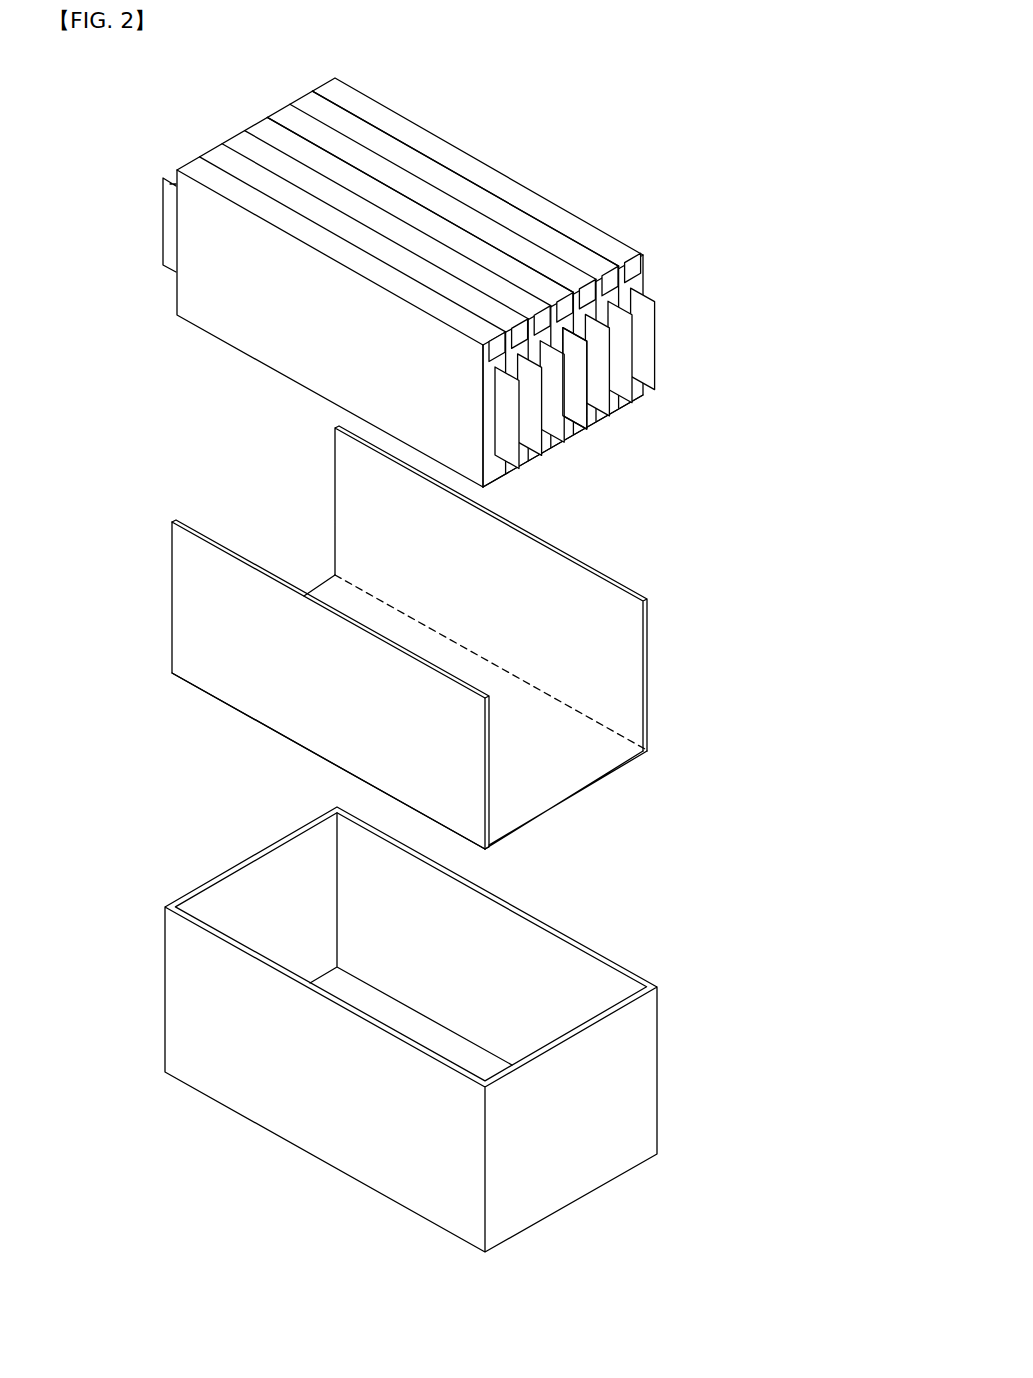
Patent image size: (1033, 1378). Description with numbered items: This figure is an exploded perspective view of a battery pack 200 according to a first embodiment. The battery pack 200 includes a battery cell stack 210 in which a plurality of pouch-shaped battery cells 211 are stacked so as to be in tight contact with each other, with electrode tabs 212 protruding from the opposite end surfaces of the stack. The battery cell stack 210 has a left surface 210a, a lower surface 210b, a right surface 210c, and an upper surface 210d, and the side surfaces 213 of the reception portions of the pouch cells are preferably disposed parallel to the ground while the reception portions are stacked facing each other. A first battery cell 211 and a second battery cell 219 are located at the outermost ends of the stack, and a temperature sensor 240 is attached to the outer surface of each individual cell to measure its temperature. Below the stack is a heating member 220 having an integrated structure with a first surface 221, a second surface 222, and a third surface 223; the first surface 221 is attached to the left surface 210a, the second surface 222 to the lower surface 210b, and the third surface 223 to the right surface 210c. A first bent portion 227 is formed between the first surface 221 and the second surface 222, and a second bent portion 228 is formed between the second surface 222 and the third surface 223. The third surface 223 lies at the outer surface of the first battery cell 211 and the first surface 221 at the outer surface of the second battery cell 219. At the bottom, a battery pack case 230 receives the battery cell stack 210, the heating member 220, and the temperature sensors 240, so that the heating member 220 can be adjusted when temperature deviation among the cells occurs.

The battery pack 200 is at (102, 84).
The battery cell stack 210 is at (710, 185).
The left surface of the battery cell stack 210a is at (270, 310).
The lower surface of the battery cell stack 210b is at (605, 430).
The right surface of the battery cell stack 210c is at (527, 185).
The upper surface of the battery cell stack 210d is at (390, 203).
The battery cell 211 is at (645, 257).
The temperature sensor 240 is at (648, 270).
The electrode tab 212 is at (645, 346).
The second battery cell 219 is at (492, 470).
The side surface of reception portion 213 is at (568, 448).
The heating member 220 is at (730, 702).
The first surface of the heating member 221 is at (250, 657).
The third surface of the heating member 223 is at (648, 643).
The second surface of the heating member 222 is at (530, 775).
The first bent portion 227 is at (278, 732).
The second bent portion 228 is at (585, 730).
The battery pack case 230 is at (730, 1085).